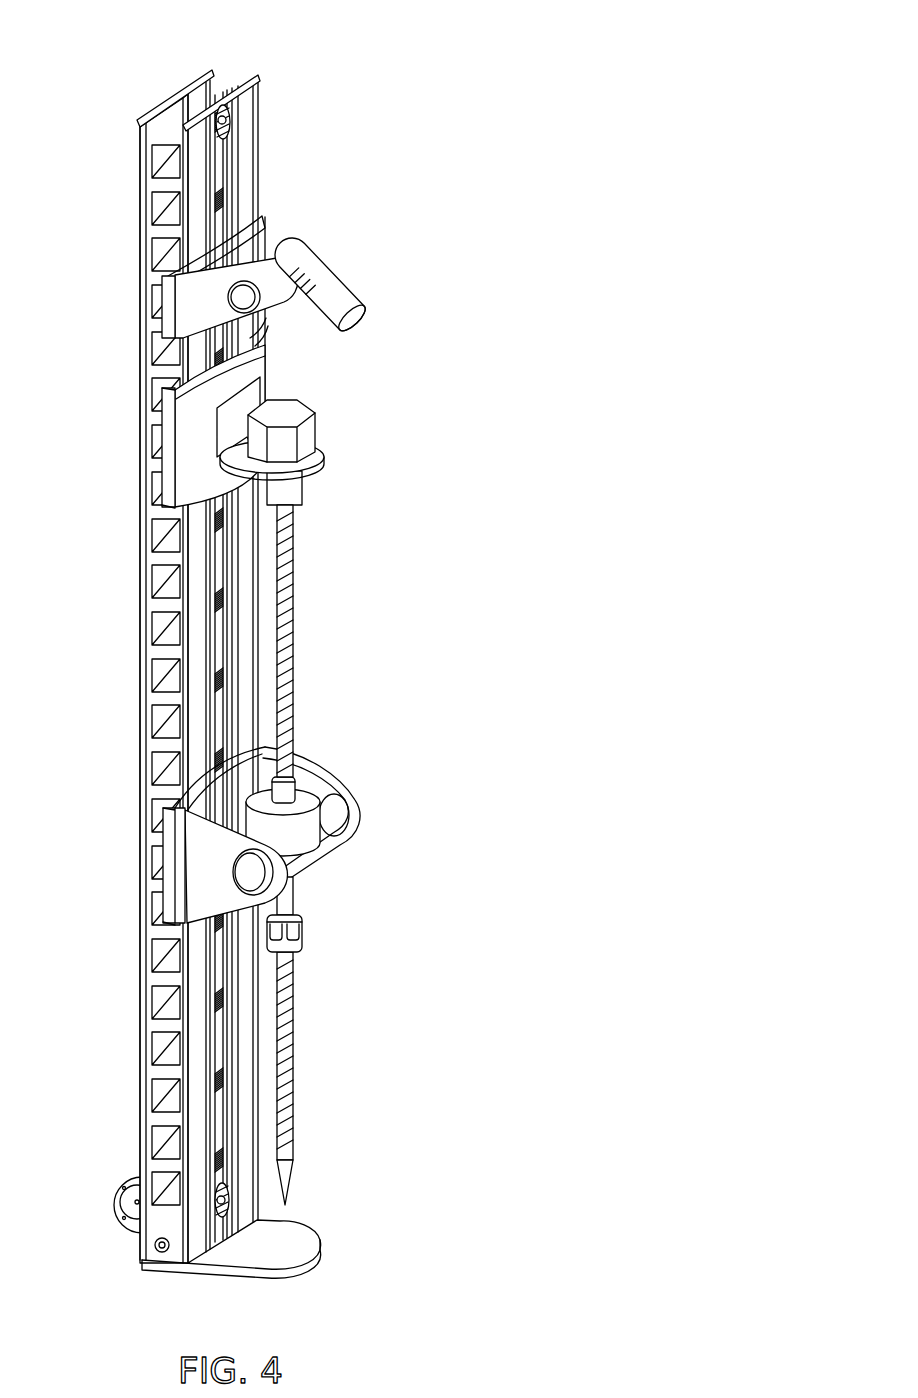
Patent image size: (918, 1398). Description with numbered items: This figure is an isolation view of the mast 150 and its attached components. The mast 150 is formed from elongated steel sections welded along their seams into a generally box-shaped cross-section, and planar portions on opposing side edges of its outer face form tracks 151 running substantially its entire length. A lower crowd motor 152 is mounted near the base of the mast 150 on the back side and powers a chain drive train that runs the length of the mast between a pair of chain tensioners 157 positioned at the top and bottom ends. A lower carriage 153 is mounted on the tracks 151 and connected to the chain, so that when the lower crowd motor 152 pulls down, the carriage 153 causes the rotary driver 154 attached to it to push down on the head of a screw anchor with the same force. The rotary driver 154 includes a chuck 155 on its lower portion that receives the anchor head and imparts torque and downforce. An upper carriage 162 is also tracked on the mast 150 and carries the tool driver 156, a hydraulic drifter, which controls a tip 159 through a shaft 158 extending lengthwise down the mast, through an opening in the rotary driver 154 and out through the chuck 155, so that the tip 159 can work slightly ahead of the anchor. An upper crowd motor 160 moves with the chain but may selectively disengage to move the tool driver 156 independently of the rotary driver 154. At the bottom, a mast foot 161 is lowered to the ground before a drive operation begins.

The mast 150 is at (524, 56).
The tracks 151 is at (246, 176).
The lower crowd motor 152 is at (110, 1195).
The lower carriage 153 is at (160, 850).
The rotary driver 154 is at (392, 800).
The chuck 155 is at (322, 933).
The tool driver 156 is at (333, 430).
The chain tensioners 157 is at (224, 118).
The shaft 158 is at (310, 600).
The tip 159 is at (305, 1174).
The upper crowd motor 160 is at (368, 276).
The mast foot 161 is at (273, 1279).
The upper carriage 162 is at (160, 492).